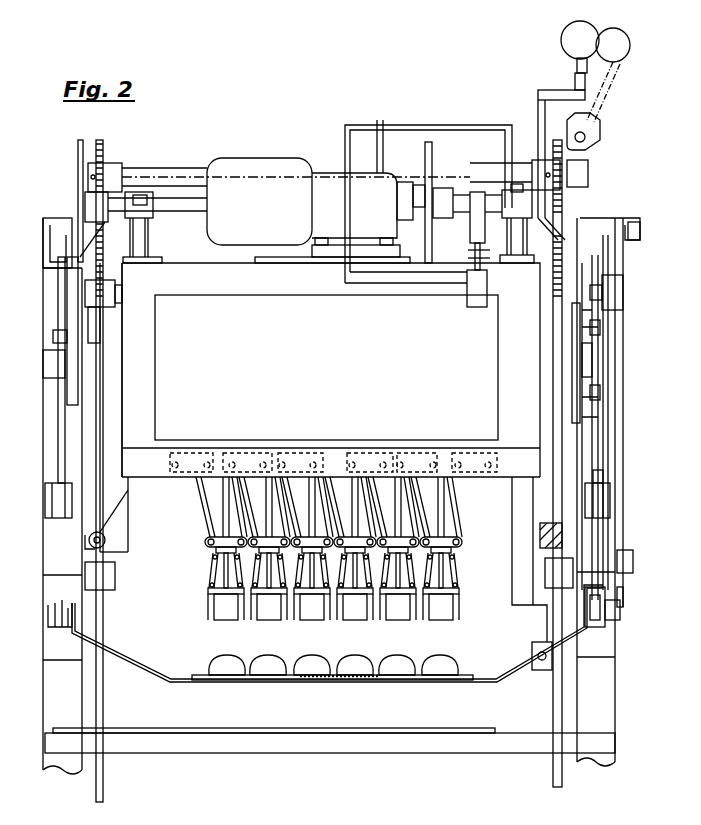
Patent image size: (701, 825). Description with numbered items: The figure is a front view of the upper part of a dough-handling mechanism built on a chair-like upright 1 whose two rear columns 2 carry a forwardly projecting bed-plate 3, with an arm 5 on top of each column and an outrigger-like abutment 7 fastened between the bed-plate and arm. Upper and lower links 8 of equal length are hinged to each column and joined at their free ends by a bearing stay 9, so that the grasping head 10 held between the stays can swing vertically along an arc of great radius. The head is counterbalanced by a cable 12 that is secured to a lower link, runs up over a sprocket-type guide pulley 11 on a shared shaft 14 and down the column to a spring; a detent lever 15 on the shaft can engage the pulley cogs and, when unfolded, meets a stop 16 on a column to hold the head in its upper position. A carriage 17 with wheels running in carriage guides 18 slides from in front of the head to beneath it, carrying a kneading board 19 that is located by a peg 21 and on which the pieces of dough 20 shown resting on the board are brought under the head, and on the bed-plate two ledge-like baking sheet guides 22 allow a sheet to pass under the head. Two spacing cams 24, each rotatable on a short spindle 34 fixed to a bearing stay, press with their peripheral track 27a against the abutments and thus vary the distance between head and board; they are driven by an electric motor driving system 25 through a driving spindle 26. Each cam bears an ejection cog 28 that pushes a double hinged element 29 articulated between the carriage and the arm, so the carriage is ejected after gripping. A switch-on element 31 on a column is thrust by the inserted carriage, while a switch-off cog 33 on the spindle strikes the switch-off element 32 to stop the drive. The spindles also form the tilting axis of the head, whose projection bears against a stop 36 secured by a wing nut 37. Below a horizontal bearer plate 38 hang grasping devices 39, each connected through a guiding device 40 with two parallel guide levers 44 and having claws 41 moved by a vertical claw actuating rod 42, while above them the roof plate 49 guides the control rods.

The upright 1 is at (88, 689).
The column 2 is at (55, 442).
The bed-plate 3 is at (360, 746).
The arm 5 is at (46, 258).
The abutment 7 is at (46, 506).
The link 8 is at (112, 282).
The bearing stay 9 is at (98, 467).
The grasping head 10 is at (493, 490).
The guide pulley 11 is at (566, 196).
The cable 12 is at (572, 148).
The shaft 14 is at (157, 172).
The detent lever 15 is at (576, 63).
The stop 16 is at (540, 92).
The carriage 17 is at (506, 672).
The carriage guide 18 is at (56, 628).
The kneading board 19 is at (206, 676).
The articles 20 is at (225, 665).
The peg 21 is at (335, 673).
The baking sheet guide 22 is at (103, 736).
The spacing cam 24 is at (62, 319).
The driving system 25 is at (219, 176).
The driving spindle 26 is at (190, 196).
The peripheral track 27a is at (596, 434).
The ejection cog 28 is at (612, 291).
The double hinged element 29 is at (624, 324).
The switch-on element 31 is at (538, 650).
The switch-off element 32 is at (478, 304).
The switch-off cog 33 is at (474, 224).
The spindle 34 is at (70, 367).
The stop 36 is at (120, 530).
The wing nut 37 is at (106, 547).
The bearer plate 38 is at (172, 446).
The grasping device 39 is at (203, 590).
The guiding device 40 is at (188, 499).
The claw 41 is at (207, 605).
The claw actuating rod 42 is at (440, 525).
The guide lever 44 is at (202, 520).
The roof plate 49 is at (174, 263).